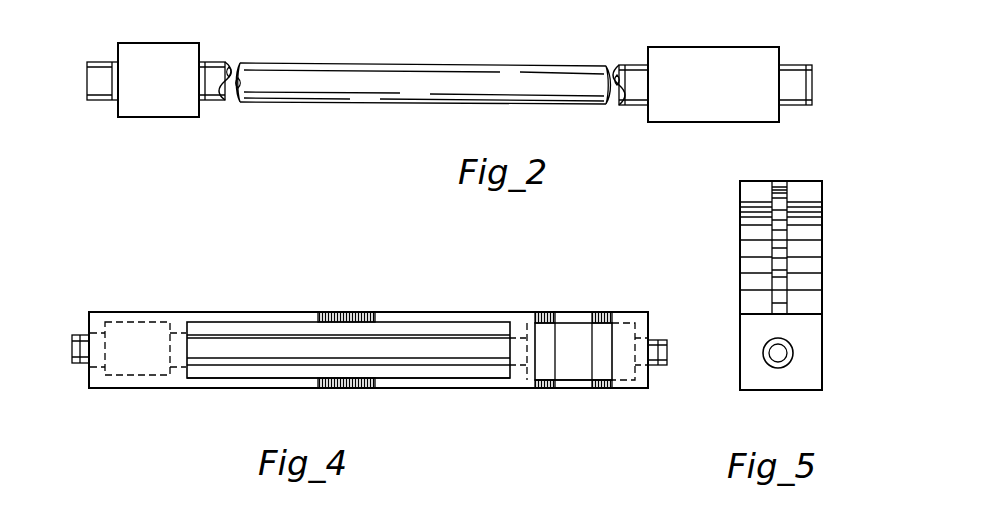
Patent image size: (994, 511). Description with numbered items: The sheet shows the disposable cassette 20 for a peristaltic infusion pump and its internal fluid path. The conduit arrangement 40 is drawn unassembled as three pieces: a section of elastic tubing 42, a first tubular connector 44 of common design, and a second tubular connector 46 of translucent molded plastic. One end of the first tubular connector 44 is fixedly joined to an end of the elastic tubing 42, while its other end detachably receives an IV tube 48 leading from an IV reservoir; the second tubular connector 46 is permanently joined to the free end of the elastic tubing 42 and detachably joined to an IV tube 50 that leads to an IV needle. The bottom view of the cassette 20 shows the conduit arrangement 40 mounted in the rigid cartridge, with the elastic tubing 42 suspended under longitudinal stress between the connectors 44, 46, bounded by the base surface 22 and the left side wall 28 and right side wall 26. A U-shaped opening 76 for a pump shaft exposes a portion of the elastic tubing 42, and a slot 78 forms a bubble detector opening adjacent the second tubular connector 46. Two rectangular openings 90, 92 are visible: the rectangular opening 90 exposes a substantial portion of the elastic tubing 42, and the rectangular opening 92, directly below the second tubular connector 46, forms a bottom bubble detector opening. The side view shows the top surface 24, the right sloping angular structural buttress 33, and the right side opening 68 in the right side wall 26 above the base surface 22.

In FIG. 4, the disposable cassette 20 is at (165, 301).
In FIG. 5, the disposable cassette 20 is at (824, 242).
In FIG. 4, the base surface 22 is at (179, 318).
In FIG. 5, the top surface 24 is at (754, 181).
In FIG. 4, the right side wall 26 is at (648, 324).
In FIG. 5, the right side wall 26 is at (780, 392).
In FIG. 4, the left side wall 28 is at (89, 324).
In FIG. 5, the right sloping angular structural buttress 33 is at (782, 181).
In FIG. 2, the conduit arrangement 40 is at (402, 110).
In FIG. 2, the elastic tubing 42 is at (442, 63).
In FIG. 4, the elastic tubing 42 is at (247, 340).
In FIG. 2, the first tubular connector 44 is at (164, 92).
In FIG. 4, the first tubular connector 44 is at (148, 362).
In FIG. 2, the second tubular connector 46 is at (723, 97).
In FIG. 4, the second tubular connector 46 is at (584, 364).
In FIG. 2, the IV tube 48 is at (87, 81).
In FIG. 4, the IV tube 48 is at (72, 350).
In FIG. 2, the IV tube 50 is at (812, 88).
In FIG. 4, the IV tube 50 is at (667, 352).
In FIG. 5, the IV tube 50 is at (786, 355).
In FIG. 5, the right side opening 68 is at (790, 346).
In FIG. 4, the U-shaped opening 76 is at (346, 316).
In FIG. 4, the slot 78 is at (568, 315).
In FIG. 4, the rectangular opening 90 is at (240, 372).
In FIG. 4, the rectangular opening 92 is at (544, 386).